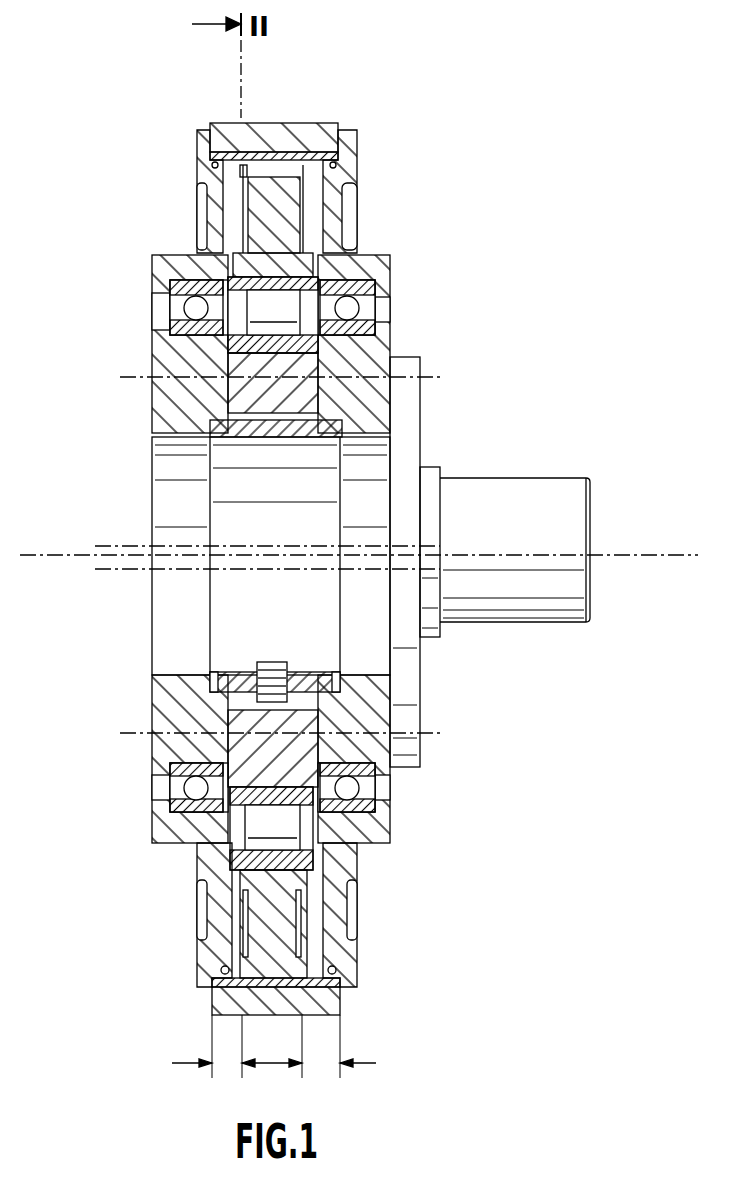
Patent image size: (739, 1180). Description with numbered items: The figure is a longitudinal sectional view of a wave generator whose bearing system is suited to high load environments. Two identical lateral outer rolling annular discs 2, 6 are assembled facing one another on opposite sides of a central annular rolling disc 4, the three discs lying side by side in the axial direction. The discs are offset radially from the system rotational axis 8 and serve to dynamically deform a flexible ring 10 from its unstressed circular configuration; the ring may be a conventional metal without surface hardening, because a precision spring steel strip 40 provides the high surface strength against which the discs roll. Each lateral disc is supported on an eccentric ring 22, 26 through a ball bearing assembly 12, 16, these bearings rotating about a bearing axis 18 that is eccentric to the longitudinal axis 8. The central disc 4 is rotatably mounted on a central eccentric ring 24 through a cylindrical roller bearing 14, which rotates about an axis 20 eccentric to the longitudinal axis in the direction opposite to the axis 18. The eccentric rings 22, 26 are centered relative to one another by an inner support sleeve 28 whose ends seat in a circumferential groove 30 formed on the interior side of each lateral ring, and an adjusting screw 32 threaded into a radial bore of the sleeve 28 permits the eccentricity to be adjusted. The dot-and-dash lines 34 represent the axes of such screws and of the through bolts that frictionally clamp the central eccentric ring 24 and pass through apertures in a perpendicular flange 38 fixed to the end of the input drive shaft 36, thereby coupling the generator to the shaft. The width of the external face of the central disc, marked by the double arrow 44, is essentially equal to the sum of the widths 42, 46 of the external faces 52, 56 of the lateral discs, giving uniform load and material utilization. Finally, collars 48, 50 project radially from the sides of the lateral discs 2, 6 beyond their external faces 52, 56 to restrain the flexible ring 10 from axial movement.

The lateral outer rolling annular disc 2 is at (212, 212).
The central annular rolling disc 4 is at (280, 200).
The lateral outer rolling annular disc 6 is at (337, 212).
The system rotational axis 8 is at (606, 553).
The flexible ring 10 is at (320, 133).
The ball bearing assembly 12 is at (175, 290).
The cylindrical roller bearing 14 is at (313, 263).
The ball bearing assembly 16 is at (350, 312).
The bearing axis 18 is at (108, 545).
The bearing axis 20 is at (108, 573).
The eccentric ring 22 is at (178, 402).
The central eccentric ring 24 is at (310, 368).
The eccentric ring 26 is at (370, 405).
The inner support sleeve 28 is at (243, 672).
The circumferential groove 30 is at (210, 675).
The adjusting screw 32 is at (272, 665).
The screw axes 34 is at (137, 377).
The input drive shaft 36 is at (573, 585).
The perpendicular flange 38 is at (410, 745).
The precision spring steel strip 40 is at (230, 987).
The width arrow 42 is at (203, 1056).
The width double arrow 44 is at (272, 1046).
The width arrow 46 is at (340, 1056).
The collar 48 is at (203, 970).
The collar 50 is at (350, 973).
The external face 52 is at (220, 980).
The external face 56 is at (333, 1000).